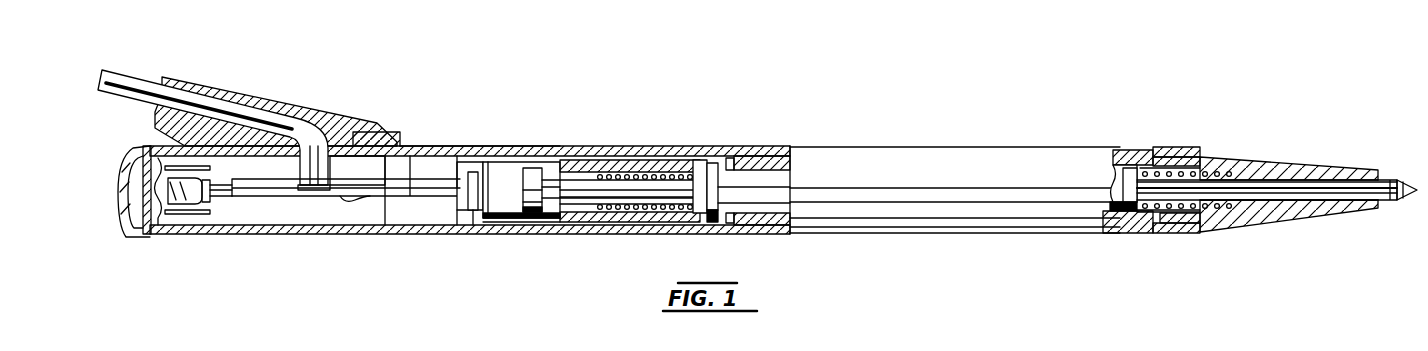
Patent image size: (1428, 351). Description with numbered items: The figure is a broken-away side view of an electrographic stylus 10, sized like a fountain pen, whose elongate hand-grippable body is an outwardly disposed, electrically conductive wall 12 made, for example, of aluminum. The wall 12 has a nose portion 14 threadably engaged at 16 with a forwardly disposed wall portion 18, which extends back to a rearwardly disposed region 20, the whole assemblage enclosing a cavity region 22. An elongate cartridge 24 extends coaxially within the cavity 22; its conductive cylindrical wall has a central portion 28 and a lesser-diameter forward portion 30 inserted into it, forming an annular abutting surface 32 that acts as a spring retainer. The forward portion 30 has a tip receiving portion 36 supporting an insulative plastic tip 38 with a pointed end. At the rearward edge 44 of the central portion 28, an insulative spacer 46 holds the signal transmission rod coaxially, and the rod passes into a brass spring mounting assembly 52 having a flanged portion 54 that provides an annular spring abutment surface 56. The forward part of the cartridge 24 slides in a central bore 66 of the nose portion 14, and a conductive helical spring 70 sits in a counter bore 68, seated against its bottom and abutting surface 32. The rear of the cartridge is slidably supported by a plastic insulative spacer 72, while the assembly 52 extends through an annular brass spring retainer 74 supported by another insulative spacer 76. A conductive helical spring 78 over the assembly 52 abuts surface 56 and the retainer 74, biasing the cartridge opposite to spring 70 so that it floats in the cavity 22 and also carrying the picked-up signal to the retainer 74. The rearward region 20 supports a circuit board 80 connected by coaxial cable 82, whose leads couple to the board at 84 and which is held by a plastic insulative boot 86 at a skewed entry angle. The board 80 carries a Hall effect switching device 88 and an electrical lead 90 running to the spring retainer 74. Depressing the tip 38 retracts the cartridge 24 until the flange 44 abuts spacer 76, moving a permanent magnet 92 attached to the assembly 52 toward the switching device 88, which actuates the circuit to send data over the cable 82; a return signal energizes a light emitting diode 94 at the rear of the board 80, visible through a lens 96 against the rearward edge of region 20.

The stylus 10 is at (958, 128).
The wall 12 is at (758, 122).
The nose portion 14 is at (1272, 162).
The threaded engagement 16 is at (1172, 148).
The wall portion 18 is at (1022, 148).
The rearwardly disposed region 20 is at (462, 146).
The cavity region 22 is at (372, 222).
The cartridge 24 is at (1257, 175).
The central portion 28 is at (1118, 212).
The forward portion 30 is at (1310, 180).
The annular abutting surface 32 is at (1130, 150).
The tip receiving portion 36 is at (1388, 205).
The tip 38 is at (1415, 182).
The rearward edge 44 is at (731, 158).
The insulative spacer 46 is at (712, 163).
The spring mounting assembly 52 is at (628, 200).
The flanged portion 54 is at (700, 160).
The spring abutment surface 56 is at (690, 210).
The central bore 66 is at (1318, 212).
The counter bore 68 is at (1226, 212).
The helical spring 70 is at (1218, 170).
The spacer 72 is at (765, 152).
The spring retainer 74 is at (592, 165).
The spacer 76 is at (562, 178).
The helical spring 78 is at (650, 174).
The circuit board 80 is at (330, 192).
The coaxial cable 82 is at (130, 74).
The lead coupling 84 is at (331, 165).
The boot 86 is at (258, 97).
The Hall effect switching device 88 is at (477, 225).
The electrical lead 90 is at (500, 224).
The permanent magnet 92 is at (530, 166).
The light emitting diode 94 is at (205, 208).
The lens 96 is at (125, 225).